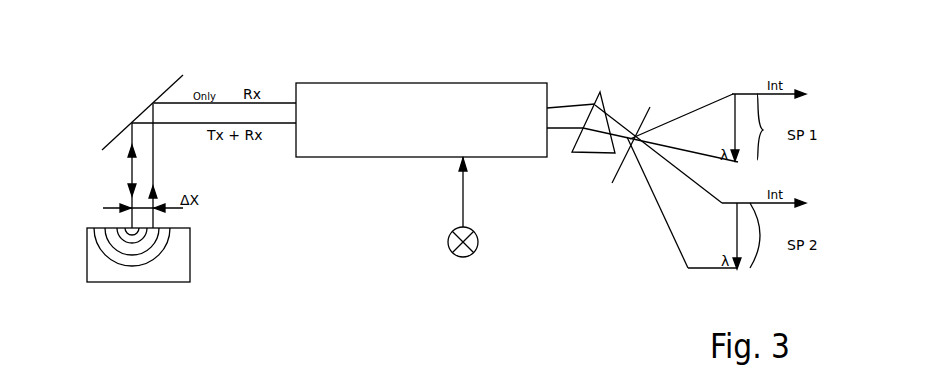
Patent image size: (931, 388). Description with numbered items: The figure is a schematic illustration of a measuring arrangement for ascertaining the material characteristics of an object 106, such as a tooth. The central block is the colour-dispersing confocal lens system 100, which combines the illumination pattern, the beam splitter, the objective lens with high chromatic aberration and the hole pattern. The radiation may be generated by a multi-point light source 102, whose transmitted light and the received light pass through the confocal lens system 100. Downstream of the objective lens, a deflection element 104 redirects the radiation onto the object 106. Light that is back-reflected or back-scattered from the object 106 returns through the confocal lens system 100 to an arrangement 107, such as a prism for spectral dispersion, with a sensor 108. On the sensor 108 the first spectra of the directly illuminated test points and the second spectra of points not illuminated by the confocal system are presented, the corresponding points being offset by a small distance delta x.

The colour-dispersing confocal lens system 100 is at (388, 83).
The multi-point light source 102 is at (478, 240).
The deflection element 104 is at (171, 72).
The object 106 is at (113, 282).
The arrangement for spectral dispersion 107 is at (597, 100).
The sensor 108 is at (650, 107).